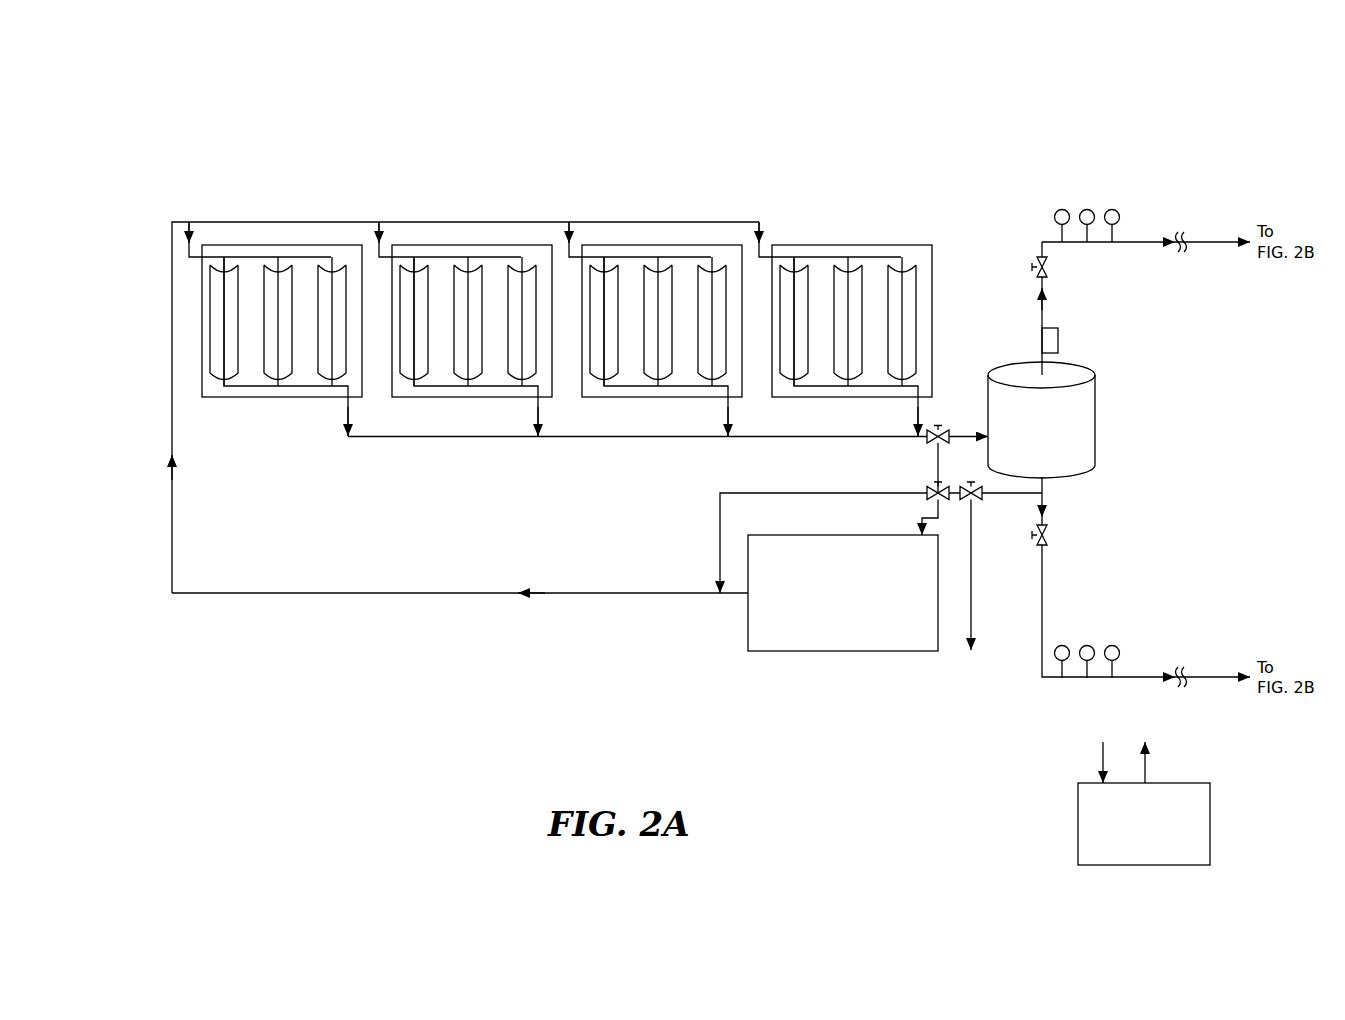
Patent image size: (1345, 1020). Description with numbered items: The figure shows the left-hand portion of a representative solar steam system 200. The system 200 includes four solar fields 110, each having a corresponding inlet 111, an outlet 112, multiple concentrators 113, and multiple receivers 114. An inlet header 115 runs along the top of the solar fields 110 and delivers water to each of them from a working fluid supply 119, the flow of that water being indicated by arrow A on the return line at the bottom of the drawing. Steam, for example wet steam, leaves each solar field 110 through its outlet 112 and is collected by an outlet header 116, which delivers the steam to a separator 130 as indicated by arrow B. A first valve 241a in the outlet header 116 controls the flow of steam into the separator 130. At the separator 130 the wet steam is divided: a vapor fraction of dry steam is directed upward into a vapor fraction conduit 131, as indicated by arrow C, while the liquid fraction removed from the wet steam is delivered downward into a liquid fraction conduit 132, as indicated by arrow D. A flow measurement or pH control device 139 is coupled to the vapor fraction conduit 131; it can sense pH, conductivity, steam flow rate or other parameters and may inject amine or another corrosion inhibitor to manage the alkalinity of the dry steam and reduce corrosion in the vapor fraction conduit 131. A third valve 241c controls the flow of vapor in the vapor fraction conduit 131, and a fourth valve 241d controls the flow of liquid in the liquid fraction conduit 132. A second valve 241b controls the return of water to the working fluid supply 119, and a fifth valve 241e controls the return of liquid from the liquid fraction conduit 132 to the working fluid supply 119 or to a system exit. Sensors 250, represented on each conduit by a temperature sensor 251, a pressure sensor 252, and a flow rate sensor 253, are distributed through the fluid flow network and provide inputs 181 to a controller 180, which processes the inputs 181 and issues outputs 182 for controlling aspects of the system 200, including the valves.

The system 200 is at (1240, 129).
The solar fields 110 is at (289, 166).
The inlet 111 is at (200, 258).
The outlet 112 is at (357, 404).
The concentrators 113 is at (355, 280).
The receivers 114 is at (325, 287).
The inlet header 115 is at (220, 222).
The outlet header 116 is at (465, 440).
The working fluid supply 119 is at (847, 653).
The separator 130 is at (1095, 417).
The vapor fraction conduit 131 is at (1042, 312).
The liquid fraction conduit 132 is at (1042, 572).
The flow measurement or pH control device 139 is at (1058, 338).
The controller 180 is at (1210, 822).
The inputs 181 is at (1102, 758).
The outputs 182 is at (1147, 765).
The first valve 241a is at (928, 440).
The second valve 241b is at (930, 498).
The third valve 241c is at (1047, 267).
The fourth valve 241d is at (1047, 535).
The fifth valve 241e is at (977, 501).
The sensors 250 is at (1108, 187).
The temperature sensor 251 is at (1055, 211).
The pressure sensor 252 is at (1082, 208).
The flow rate sensor 253 is at (1120, 211).
The arrow A is at (642, 597).
The arrow B is at (972, 433).
The arrow C is at (1040, 322).
The arrow D is at (1042, 490).